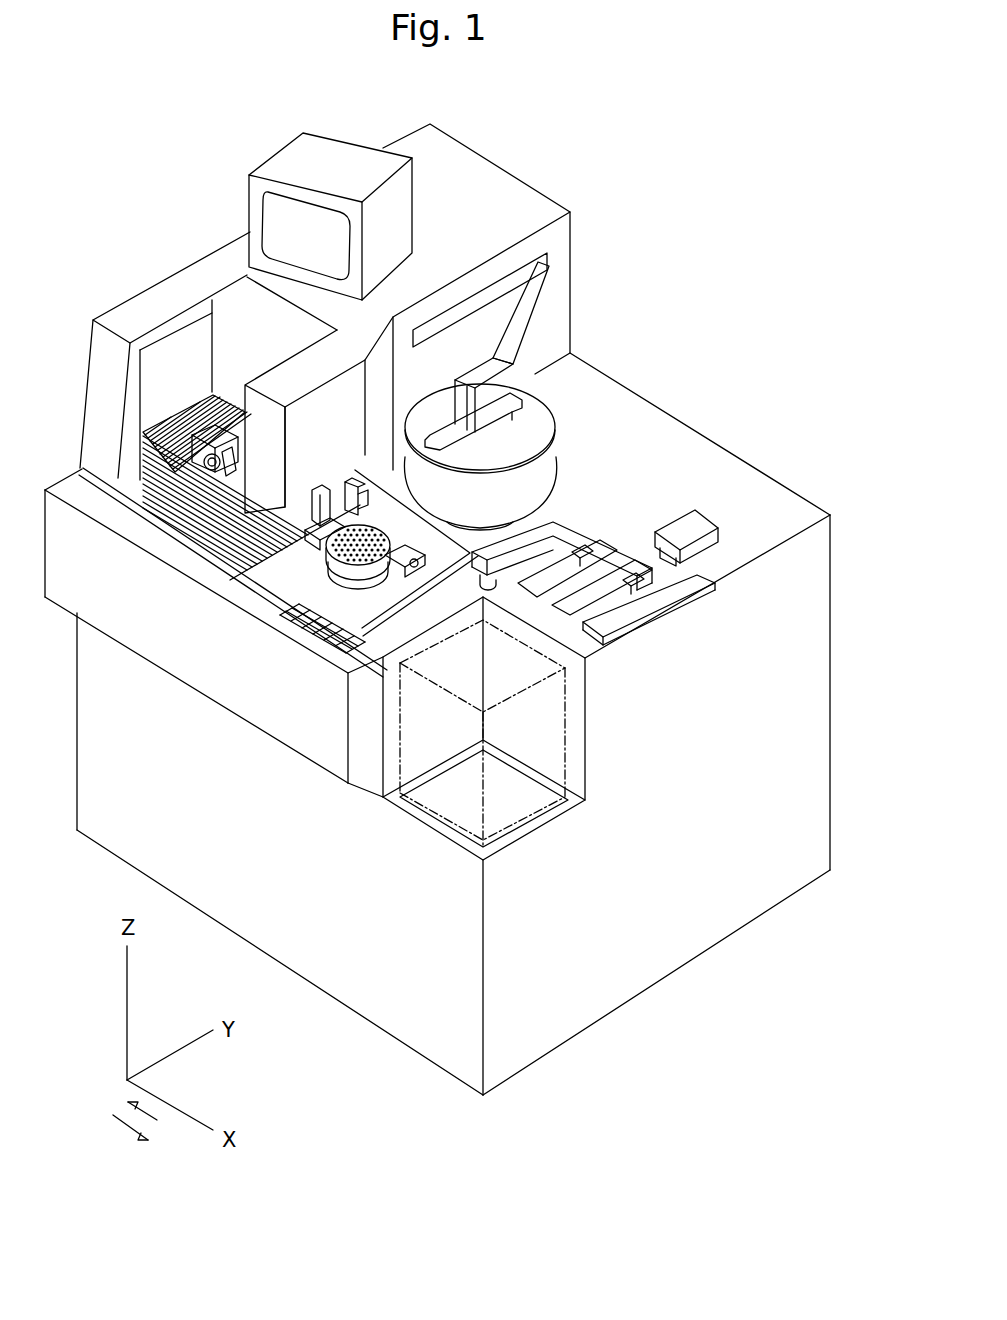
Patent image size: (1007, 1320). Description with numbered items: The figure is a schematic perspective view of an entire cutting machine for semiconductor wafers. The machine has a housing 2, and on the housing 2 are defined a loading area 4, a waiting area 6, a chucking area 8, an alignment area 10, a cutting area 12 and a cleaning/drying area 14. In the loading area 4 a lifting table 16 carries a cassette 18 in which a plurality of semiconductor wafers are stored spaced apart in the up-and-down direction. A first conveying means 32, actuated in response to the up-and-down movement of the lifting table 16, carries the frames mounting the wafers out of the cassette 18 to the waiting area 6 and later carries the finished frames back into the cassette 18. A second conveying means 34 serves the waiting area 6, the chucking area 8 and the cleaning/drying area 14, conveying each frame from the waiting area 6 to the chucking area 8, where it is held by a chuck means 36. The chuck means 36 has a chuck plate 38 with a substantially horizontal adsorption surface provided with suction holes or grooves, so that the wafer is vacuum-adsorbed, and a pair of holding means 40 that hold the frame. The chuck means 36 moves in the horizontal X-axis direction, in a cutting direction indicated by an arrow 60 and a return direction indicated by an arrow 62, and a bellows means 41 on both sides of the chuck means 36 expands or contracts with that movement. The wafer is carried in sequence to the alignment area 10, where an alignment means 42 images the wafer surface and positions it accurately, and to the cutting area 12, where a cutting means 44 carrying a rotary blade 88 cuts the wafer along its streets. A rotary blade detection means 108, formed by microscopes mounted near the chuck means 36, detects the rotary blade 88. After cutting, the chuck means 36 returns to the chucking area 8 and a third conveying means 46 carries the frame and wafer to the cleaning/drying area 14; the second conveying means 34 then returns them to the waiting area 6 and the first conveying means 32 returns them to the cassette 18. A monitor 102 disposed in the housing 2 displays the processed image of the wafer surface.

The housing 2 is at (652, 404).
The loading area 4 is at (402, 813).
The waiting area 6 is at (706, 562).
The chucking area 8 is at (310, 553).
The alignment area 10 is at (270, 515).
The cutting area 12 is at (84, 451).
The cleaning/drying area 14 is at (550, 469).
The lifting table 16 is at (467, 822).
The cassette 18 is at (563, 718).
The first conveying means 32 is at (697, 517).
The second conveying means 34 is at (573, 522).
The chuck means 36 is at (387, 580).
The chuck plate 38 is at (378, 530).
The holding means 40 is at (316, 563).
The bellows means 41 is at (192, 487).
The alignment means 42 is at (312, 506).
The cutting means 44 is at (205, 425).
The third conveying means 46 is at (527, 297).
The arrow indicating cutting direction 60 is at (155, 1123).
The arrow indicating return direction 62 is at (122, 1128).
The rotary blade 88 is at (183, 455).
The monitor 102 is at (248, 205).
The rotary blade detection means 108 is at (377, 490).